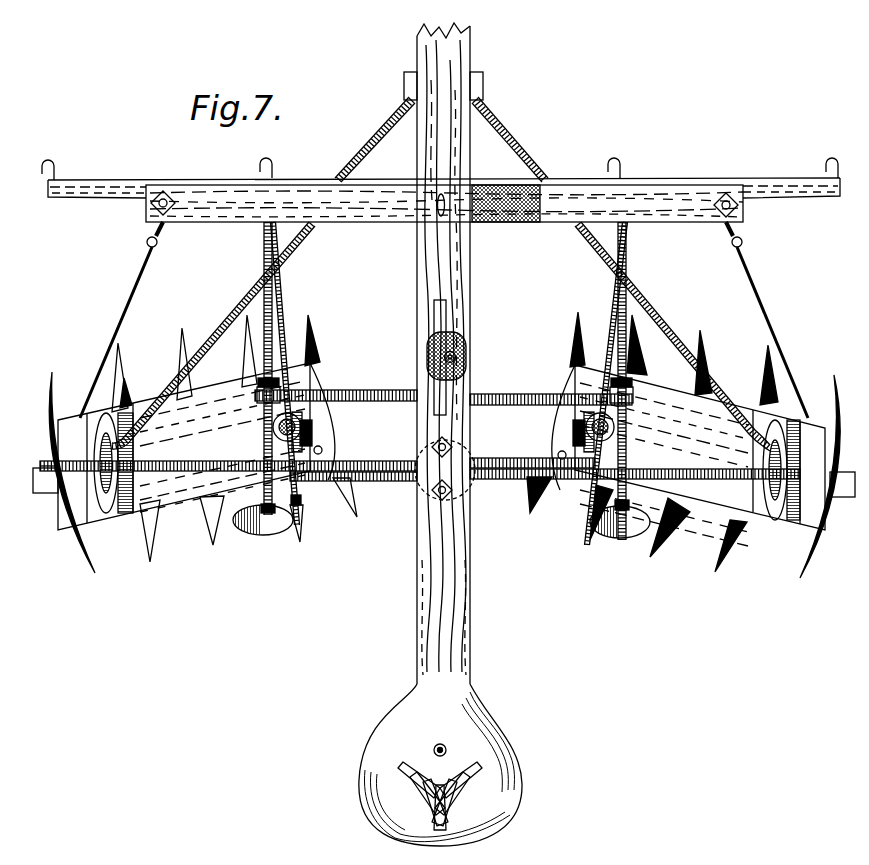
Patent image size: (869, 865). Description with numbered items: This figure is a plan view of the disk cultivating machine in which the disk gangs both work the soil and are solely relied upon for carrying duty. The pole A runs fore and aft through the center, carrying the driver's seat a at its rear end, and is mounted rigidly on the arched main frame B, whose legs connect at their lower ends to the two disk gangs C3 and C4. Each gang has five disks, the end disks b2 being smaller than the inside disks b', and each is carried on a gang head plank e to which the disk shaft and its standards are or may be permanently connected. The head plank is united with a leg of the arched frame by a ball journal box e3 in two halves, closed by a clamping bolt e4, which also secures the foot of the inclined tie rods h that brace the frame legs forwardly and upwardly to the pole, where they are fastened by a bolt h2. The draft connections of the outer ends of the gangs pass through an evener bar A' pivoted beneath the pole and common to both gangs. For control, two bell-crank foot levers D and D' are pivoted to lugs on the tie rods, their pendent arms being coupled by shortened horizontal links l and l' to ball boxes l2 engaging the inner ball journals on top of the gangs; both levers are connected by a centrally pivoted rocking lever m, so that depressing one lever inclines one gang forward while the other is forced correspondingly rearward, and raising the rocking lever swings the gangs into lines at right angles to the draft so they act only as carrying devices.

The pole A is at (445, 353).
The driver's seat a is at (440, 765).
The evener bar A' is at (441, 190).
The bolt h2 is at (441, 123).
The tie rod h is at (444, 336).
The horizontal link l is at (267, 379).
The horizontal link l' is at (618, 383).
The ball box l2 is at (640, 410).
The foot lever D is at (277, 436).
The foot lever D' is at (612, 437).
The gang head plank e is at (441, 454).
The ball journal box e3 is at (444, 466).
The clamping bolt e4 is at (812, 394).
The end disk b2 is at (440, 475).
The inside disk b' is at (445, 442).
The disk gang C3 is at (271, 475).
The disk gang C4 is at (616, 474).
The rocking lever m is at (443, 388).
The arched main frame B is at (420, 457).